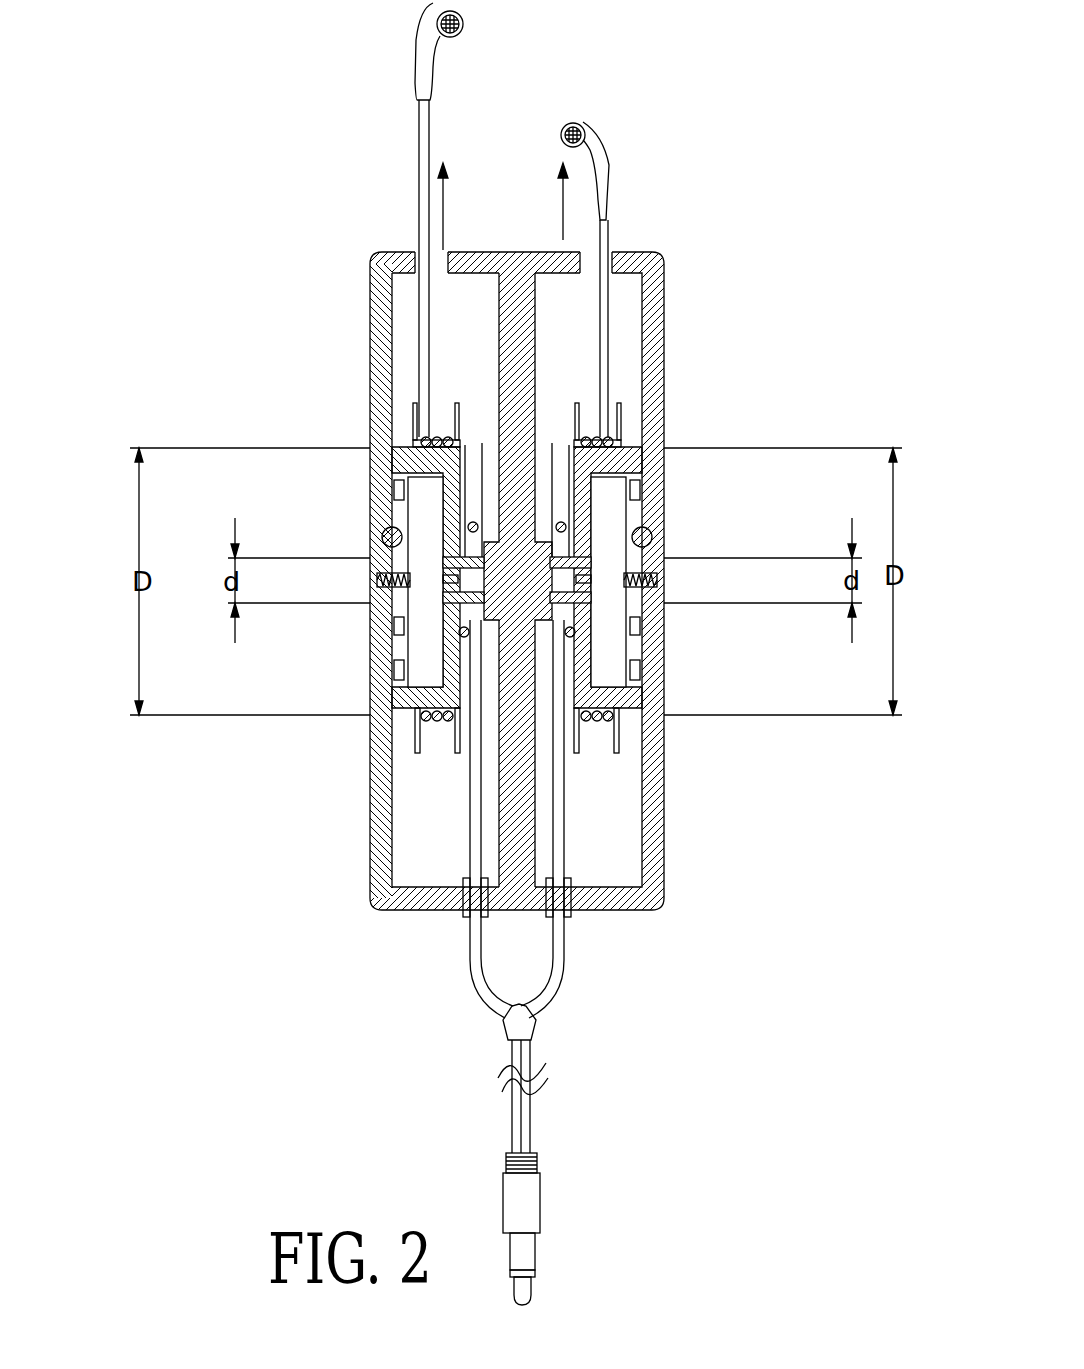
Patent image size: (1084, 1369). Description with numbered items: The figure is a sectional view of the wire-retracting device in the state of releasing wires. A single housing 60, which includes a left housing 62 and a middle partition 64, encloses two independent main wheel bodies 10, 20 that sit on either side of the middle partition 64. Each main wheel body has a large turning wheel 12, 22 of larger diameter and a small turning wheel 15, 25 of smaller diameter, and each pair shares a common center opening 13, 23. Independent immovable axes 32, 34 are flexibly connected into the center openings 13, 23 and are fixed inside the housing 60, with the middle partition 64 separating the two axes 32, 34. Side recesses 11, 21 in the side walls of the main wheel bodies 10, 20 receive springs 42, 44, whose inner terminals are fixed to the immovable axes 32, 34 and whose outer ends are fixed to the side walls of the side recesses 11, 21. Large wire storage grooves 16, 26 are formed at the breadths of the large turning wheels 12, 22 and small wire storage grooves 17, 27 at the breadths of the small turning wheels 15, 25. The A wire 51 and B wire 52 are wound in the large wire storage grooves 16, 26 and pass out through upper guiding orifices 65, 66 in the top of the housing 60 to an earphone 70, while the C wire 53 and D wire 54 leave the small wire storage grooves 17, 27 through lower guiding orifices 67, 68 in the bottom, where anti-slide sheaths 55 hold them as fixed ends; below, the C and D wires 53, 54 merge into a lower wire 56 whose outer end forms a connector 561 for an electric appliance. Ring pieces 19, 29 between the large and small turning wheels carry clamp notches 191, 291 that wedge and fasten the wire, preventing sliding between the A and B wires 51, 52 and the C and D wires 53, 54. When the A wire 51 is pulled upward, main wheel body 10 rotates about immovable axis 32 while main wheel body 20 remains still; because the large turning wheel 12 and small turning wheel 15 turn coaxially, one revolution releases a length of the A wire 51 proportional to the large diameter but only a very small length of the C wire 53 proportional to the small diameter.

The main wheel body 10 is at (407, 727).
The side recess 11 is at (440, 692).
The large turning wheel 12 is at (425, 715).
The center opening 13 is at (410, 570).
The small turning wheel 15 is at (462, 617).
The large wire storage groove 16 is at (478, 497).
The small wire storage groove 17 is at (442, 413).
The ring piece 19 is at (460, 743).
The clamp notch 191 is at (460, 428).
The main wheel body 20 is at (648, 655).
The side recess 21 is at (623, 700).
The large turning wheel 22 is at (571, 750).
The center opening 23 is at (580, 590).
The small turning wheel 25 is at (612, 617).
The large wire storage groove 26 is at (628, 405).
The small wire storage groove 27 is at (625, 452).
The ring piece 29 is at (612, 735).
The clamp notch 291 is at (590, 408).
The immovable axis 32 is at (440, 600).
The immovable axis 34 is at (600, 547).
The spring 42 is at (478, 598).
The spring 44 is at (612, 630).
The A wire 51 is at (424, 170).
The B wire 52 is at (612, 330).
The C wire 53 is at (463, 747).
The D wire 54 is at (652, 492).
The anti-slide sheath 55 is at (463, 918).
The lower wire 56 is at (522, 1103).
The connector 561 is at (532, 1202).
The housing 60 is at (372, 375).
The left housing 62 is at (370, 432).
The middle partition 64 is at (520, 317).
The upper guiding orifice 65 is at (441, 257).
The upper guiding orifice 66 is at (598, 262).
The lower guiding orifice 67 is at (465, 905).
The lower guiding orifice 68 is at (573, 912).
The earphone 70 is at (433, 68).